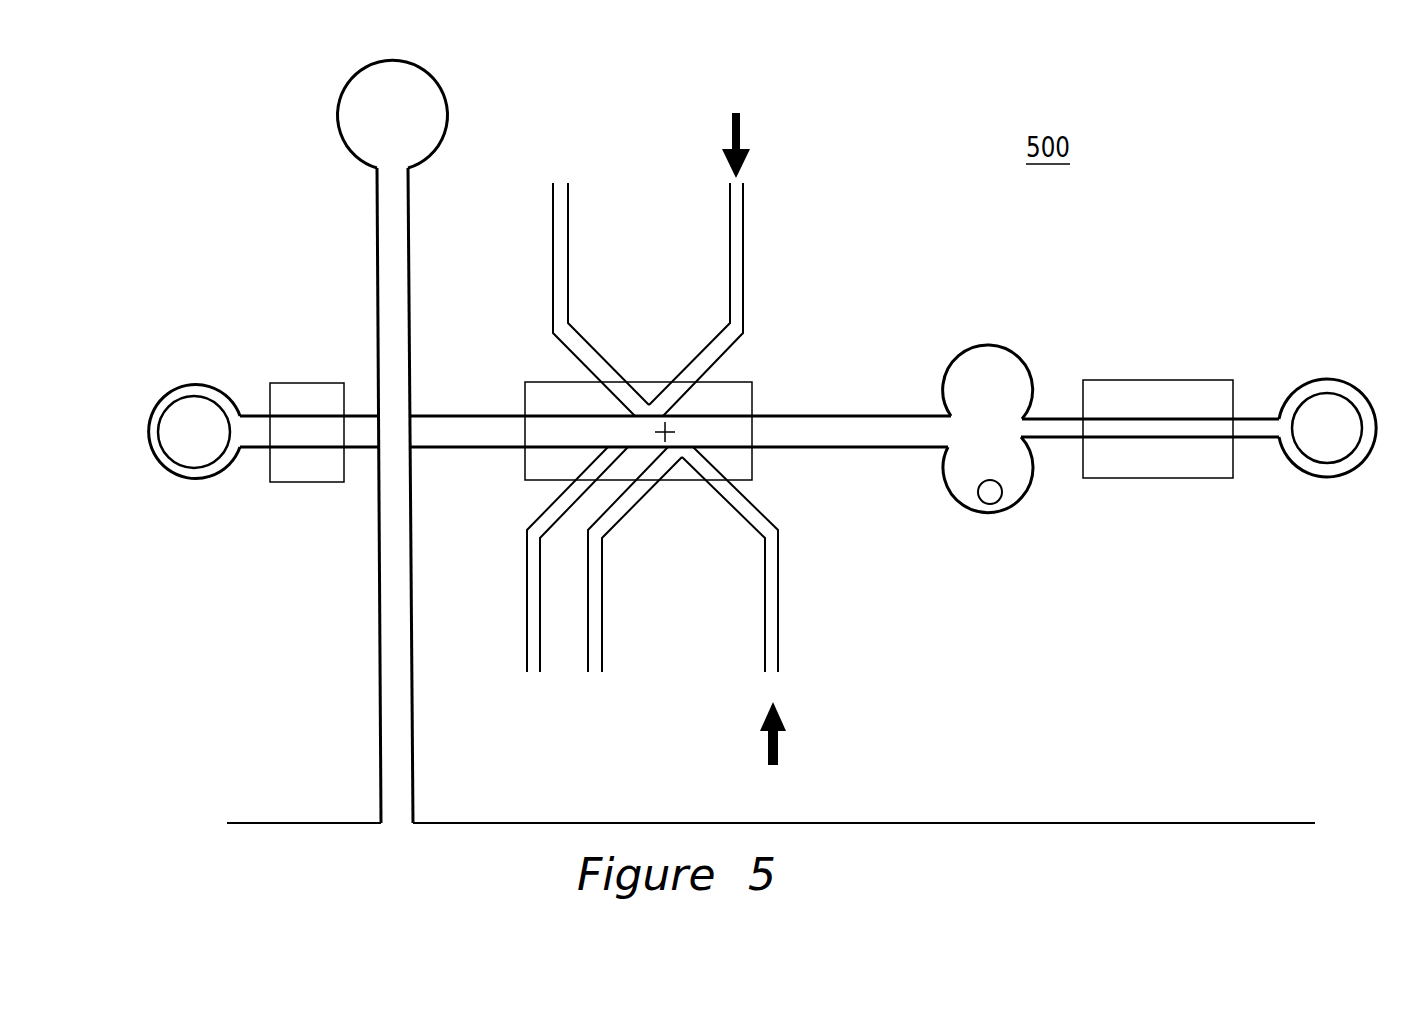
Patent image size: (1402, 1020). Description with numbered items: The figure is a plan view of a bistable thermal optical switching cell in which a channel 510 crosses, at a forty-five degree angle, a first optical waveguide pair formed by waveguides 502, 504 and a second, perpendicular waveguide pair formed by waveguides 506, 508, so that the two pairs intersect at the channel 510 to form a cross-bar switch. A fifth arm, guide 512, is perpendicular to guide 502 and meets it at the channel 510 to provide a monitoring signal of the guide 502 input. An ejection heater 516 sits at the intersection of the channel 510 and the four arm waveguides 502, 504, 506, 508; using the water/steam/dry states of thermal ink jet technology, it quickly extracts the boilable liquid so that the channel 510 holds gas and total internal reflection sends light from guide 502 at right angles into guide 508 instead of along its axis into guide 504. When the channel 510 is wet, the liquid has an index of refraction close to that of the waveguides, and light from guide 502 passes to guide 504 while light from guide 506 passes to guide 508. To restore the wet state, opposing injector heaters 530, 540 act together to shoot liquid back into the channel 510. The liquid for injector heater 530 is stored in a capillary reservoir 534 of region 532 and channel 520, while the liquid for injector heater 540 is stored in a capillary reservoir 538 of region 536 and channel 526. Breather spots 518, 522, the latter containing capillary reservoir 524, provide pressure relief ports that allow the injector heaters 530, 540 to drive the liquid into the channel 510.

The incoming waveguide 502 is at (745, 222).
The outgoing waveguide 504 is at (527, 622).
The incoming waveguide 506 is at (780, 637).
The outgoing waveguide 508 is at (570, 213).
The channel 510 is at (479, 433).
The monitoring waveguide 512 is at (604, 628).
The ejection heater 516 is at (752, 392).
The breather spot 518 is at (340, 105).
The channel 520 is at (1257, 440).
The breather spot 522 is at (946, 376).
The capillary reservoir 524 is at (980, 496).
The channel 526 is at (366, 416).
The injector heater 530 is at (1152, 380).
The region 532 is at (1310, 380).
The capillary reservoir 534 is at (1304, 443).
The region 536 is at (167, 397).
The capillary reservoir 538 is at (171, 447).
The injector heater 540 is at (285, 383).